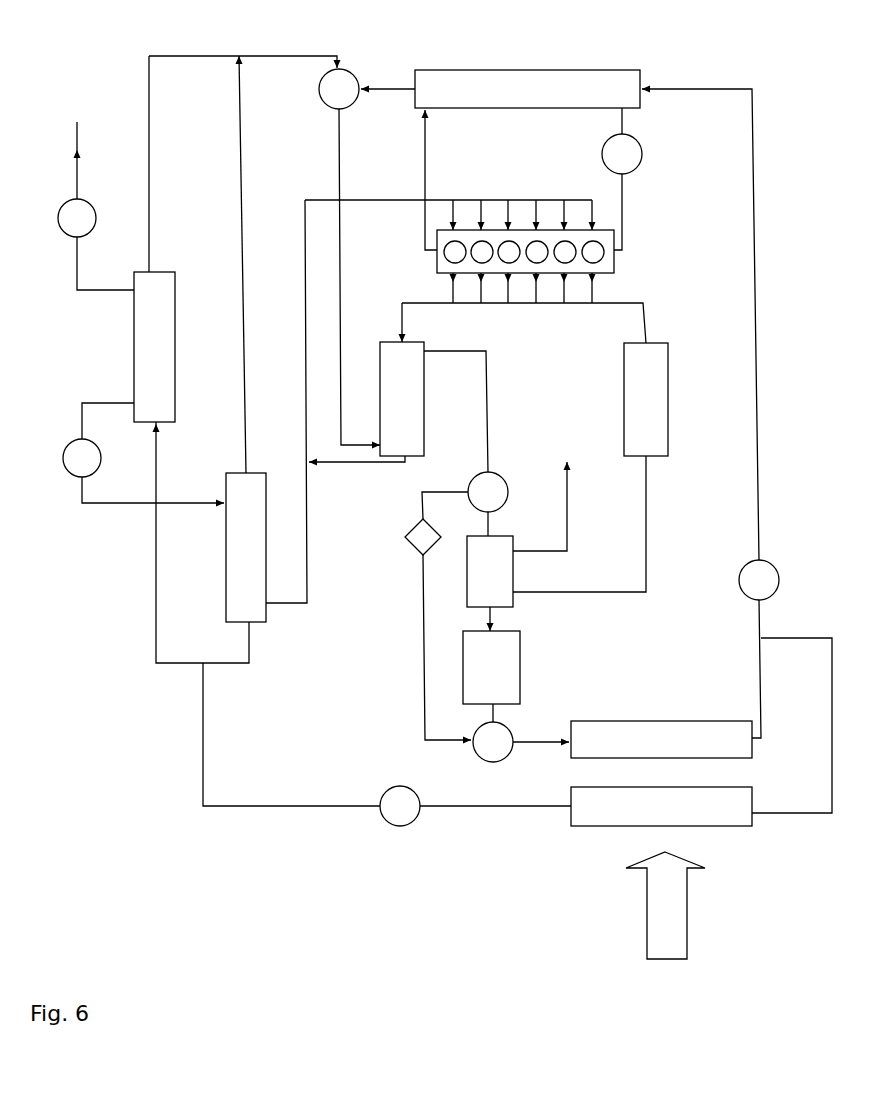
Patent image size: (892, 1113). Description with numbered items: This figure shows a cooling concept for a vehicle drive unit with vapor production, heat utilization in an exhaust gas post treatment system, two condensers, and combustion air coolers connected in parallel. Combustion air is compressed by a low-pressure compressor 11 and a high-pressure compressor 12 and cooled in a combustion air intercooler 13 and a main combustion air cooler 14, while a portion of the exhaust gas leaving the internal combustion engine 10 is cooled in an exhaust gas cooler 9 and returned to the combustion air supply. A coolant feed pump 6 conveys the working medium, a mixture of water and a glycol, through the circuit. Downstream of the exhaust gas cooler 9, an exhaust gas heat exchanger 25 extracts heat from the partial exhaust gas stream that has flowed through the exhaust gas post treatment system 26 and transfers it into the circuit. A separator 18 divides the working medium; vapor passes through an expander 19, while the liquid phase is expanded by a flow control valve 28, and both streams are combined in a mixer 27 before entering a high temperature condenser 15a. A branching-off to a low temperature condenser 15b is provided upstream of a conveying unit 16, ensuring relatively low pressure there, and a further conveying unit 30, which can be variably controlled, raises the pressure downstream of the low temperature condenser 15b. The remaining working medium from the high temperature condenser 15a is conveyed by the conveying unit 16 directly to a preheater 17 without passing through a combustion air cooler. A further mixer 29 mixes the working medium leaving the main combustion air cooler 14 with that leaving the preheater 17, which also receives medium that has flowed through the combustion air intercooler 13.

The coolant feed pump 6 is at (627, 157).
The exhaust gas cooler 9 is at (398, 407).
The internal combustion engine 10 is at (550, 262).
The low-pressure compressor 11 is at (75, 222).
The high-pressure compressor 12 is at (83, 453).
The combustion air intercooler 13 is at (191, 467).
The main combustion air cooler 14 is at (246, 547).
The high temperature condenser 15a is at (661, 739).
The low temperature condenser 15b is at (661, 806).
The conveying unit 16 is at (763, 578).
The preheater 17 is at (527, 89).
The separator 18 is at (487, 493).
The expander 19 is at (491, 664).
The exhaust gas heat exchanger 25 is at (519, 534).
The exhaust gas post treatment system 26 is at (590, 467).
The mixer 27 is at (505, 730).
The flow control valve 28 is at (412, 540).
The further mixer 29 is at (343, 87).
The further conveying unit 30 is at (398, 802).